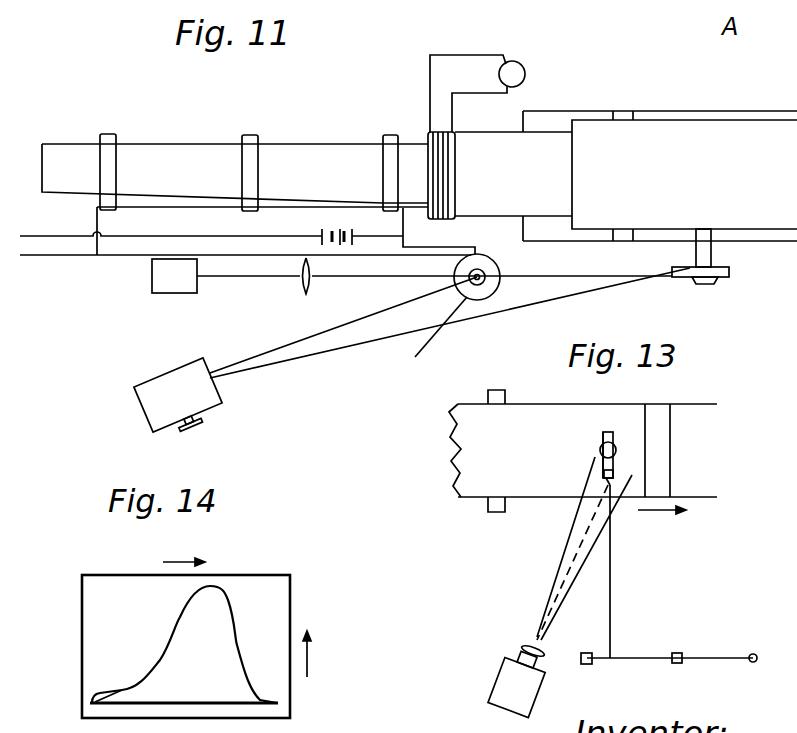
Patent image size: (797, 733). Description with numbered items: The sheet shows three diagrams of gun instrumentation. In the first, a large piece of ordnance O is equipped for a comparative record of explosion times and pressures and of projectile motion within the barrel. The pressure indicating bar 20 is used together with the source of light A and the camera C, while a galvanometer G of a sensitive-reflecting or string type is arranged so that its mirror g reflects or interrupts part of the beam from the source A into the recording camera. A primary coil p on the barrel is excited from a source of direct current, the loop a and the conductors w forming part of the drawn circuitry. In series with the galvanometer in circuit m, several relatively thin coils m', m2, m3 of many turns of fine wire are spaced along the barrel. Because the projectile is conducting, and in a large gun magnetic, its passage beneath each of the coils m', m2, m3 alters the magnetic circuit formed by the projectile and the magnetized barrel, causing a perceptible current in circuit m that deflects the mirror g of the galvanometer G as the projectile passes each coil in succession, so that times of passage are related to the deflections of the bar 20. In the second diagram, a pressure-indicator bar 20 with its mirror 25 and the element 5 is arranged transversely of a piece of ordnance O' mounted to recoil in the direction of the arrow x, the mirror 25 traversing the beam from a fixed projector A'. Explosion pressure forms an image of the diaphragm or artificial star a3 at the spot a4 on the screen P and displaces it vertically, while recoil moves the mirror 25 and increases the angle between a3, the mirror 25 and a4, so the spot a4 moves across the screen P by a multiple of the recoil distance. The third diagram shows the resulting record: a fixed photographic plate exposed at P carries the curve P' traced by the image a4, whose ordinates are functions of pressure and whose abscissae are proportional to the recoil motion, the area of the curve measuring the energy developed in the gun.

In FIG. 11, the coil m3 is at (112, 132).
In FIG. 11, the coil m2 is at (255, 133).
In FIG. 11, the coil m' is at (391, 151).
In FIG. 11, the circuit m is at (237, 228).
In FIG. 11, the conductor wires w is at (40, 237).
In FIG. 11, the source of light A is at (145, 282).
In FIG. 11, the mirror g is at (486, 268).
In FIG. 11, the primary coil p is at (454, 133).
In FIG. 13, the primary coil p is at (640, 663).
In FIG. 11, the loop / armature a is at (505, 81).
In FIG. 11, the piece of ordnance O is at (684, 148).
In FIG. 11, the pressure indicating bar 20 is at (745, 258).
In FIG. 13, the pressure indicating bar 20 is at (602, 437).
In FIG. 11, the camera C is at (401, 354).
In FIG. 11, the galvanometer G is at (435, 348).
In FIG. 13, the piece of ordnance O' is at (551, 451).
In FIG. 13, the lens element 5 is at (614, 446).
In FIG. 13, the mirror 25 is at (613, 475).
In FIG. 13, the arrow x is at (662, 524).
In FIG. 13, the diaphragm or artificial star a3 is at (528, 646).
In FIG. 13, the image a4 is at (613, 658).
In FIG. 13, the fixed projector A' is at (498, 682).
In FIG. 14, the screen P is at (210, 643).
In FIG. 14, the curve P' is at (103, 665).